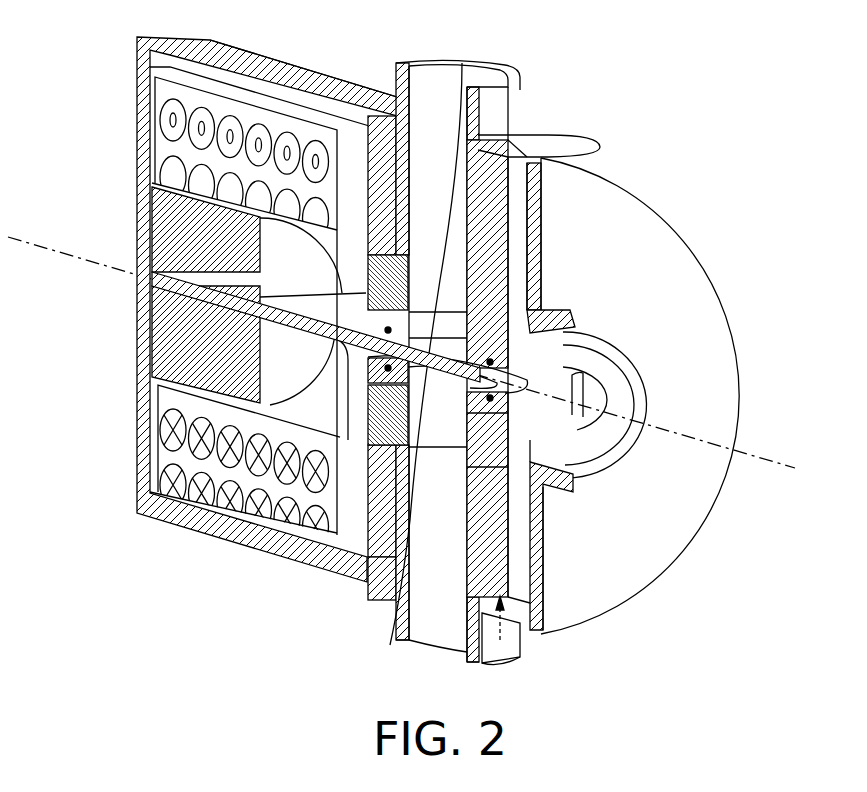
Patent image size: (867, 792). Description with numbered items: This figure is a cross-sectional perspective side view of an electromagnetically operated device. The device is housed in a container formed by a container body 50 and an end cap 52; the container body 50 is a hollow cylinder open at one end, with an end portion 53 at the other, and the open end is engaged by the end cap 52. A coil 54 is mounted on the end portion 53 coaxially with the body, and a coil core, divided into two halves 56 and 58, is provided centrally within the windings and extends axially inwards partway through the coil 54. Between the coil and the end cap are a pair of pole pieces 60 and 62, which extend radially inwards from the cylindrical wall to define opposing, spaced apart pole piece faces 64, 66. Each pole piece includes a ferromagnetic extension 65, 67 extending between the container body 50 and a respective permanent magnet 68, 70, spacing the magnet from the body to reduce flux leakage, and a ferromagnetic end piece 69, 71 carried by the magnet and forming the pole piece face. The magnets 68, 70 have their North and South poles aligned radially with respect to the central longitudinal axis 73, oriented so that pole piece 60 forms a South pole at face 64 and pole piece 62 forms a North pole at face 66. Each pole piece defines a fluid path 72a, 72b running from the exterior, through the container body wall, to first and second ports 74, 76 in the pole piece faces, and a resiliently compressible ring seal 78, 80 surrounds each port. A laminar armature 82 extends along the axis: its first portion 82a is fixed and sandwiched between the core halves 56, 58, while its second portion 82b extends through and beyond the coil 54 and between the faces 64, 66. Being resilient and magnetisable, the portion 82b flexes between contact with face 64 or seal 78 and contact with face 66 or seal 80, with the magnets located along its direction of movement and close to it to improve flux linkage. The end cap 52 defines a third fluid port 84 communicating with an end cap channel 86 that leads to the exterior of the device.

The container body 50 is at (255, 78).
The end cap 52 is at (612, 195).
The end portion 53 is at (140, 60).
The coil 54 is at (172, 123).
The coil core half 56 is at (157, 238).
The coil core half 58 is at (157, 313).
The pole piece 60 is at (489, 175).
The pole piece 62 is at (503, 612).
The pole piece face 64 is at (618, 448).
The ferromagnetic extension 65 is at (383, 150).
The pole piece face 66 is at (640, 375).
The ferromagnetic extension 67 is at (378, 560).
The permanent magnet 68 is at (540, 307).
The ferromagnetic end piece 69 is at (375, 255).
The permanent magnet 70 is at (530, 440).
The ferromagnetic end piece 71 is at (540, 490).
The fluid path 72a is at (424, 90).
The fluid path 72b is at (433, 603).
The central longitudinal axis 73 is at (772, 462).
The first port 74 is at (462, 63).
The second port 76 is at (392, 598).
The ring seal 78 is at (580, 360).
The ring seal 80 is at (335, 460).
The laminar armature 82 is at (62, 362).
The first armature portion 82a is at (157, 357).
The second armature portion 82b is at (172, 420).
The third fluid port 84 is at (645, 412).
The end cap channel 86 is at (640, 433).